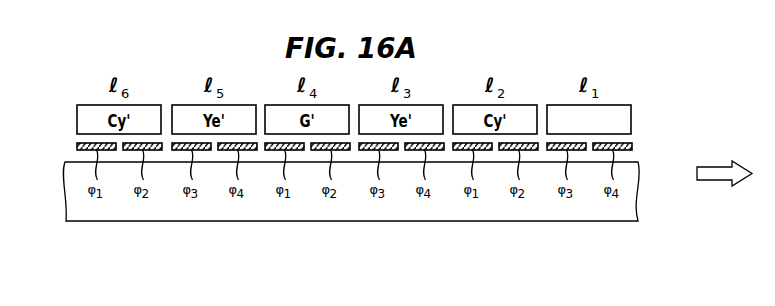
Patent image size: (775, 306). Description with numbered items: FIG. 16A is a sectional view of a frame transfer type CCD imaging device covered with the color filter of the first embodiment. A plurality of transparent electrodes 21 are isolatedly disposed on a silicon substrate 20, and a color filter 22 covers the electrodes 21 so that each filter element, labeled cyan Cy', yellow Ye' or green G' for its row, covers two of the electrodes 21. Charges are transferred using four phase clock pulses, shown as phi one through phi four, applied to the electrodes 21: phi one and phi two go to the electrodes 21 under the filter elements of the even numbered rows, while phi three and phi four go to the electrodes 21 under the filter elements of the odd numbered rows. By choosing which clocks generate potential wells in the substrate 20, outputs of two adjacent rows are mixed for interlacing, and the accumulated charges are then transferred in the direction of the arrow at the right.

The silicon substrate 20 is at (590, 208).
The transparent electrodes 21 is at (530, 150).
The color filter 22 is at (620, 118).